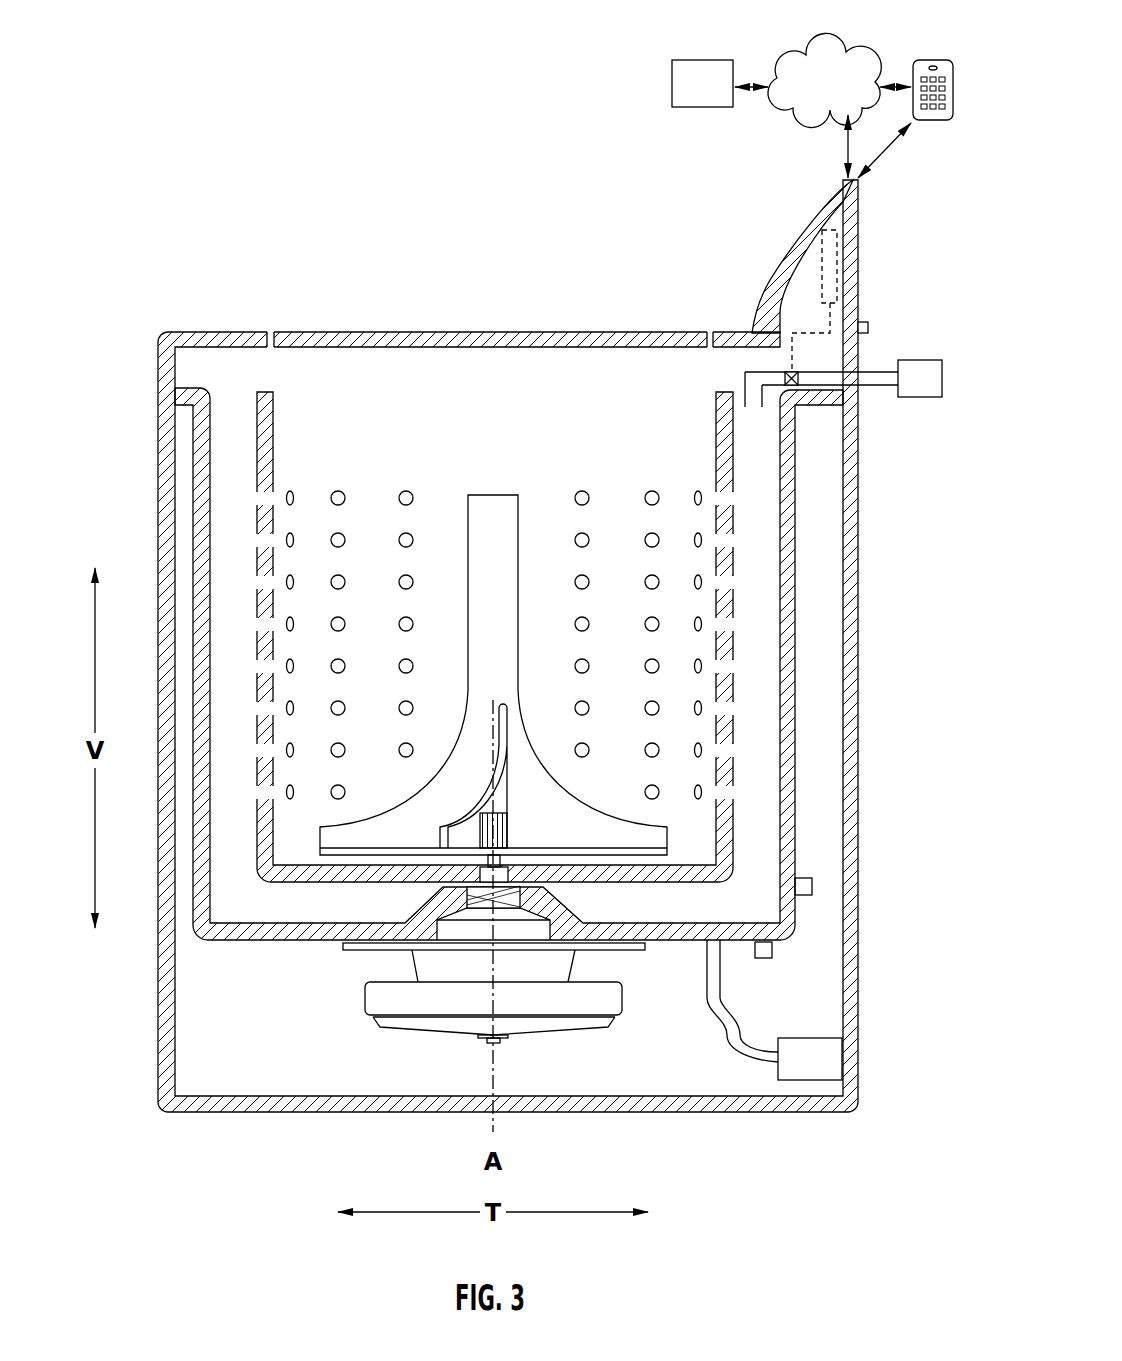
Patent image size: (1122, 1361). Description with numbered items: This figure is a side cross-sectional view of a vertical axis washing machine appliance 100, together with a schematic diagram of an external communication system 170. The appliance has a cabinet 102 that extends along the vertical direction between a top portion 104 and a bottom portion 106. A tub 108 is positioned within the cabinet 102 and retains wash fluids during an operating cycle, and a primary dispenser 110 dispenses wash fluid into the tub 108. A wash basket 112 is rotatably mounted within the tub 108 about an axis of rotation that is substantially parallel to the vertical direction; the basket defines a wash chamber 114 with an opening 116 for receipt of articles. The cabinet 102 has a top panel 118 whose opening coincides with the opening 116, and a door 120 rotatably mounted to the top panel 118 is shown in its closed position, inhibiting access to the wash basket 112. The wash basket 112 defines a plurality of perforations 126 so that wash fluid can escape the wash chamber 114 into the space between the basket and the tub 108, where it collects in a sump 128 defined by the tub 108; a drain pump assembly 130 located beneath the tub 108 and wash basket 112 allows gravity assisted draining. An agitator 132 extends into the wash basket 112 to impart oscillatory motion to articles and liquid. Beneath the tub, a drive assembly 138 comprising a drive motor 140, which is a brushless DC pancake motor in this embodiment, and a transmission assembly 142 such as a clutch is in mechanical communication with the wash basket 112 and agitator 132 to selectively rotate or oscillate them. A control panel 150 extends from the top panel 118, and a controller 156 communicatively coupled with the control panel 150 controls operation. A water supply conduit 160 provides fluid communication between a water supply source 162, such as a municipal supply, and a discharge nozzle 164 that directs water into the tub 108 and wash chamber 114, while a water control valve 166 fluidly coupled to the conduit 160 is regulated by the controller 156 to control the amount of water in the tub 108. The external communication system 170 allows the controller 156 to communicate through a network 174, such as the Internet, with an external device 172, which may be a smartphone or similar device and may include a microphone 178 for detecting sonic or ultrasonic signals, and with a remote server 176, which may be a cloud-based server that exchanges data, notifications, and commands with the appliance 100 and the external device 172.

The washing machine appliance 100 is at (198, 213).
The cabinet 102 is at (167, 437).
The top portion 104 is at (150, 340).
The bottom portion 106 is at (145, 1108).
The tub 108 is at (792, 783).
The primary dispenser 110 is at (735, 372).
The wash basket 112 is at (257, 417).
The wash chamber 114 is at (311, 440).
The opening 116 is at (578, 392).
The top panel 118 is at (200, 330).
The door 120 is at (382, 338).
The perforations 126 is at (417, 490).
The sump 128 is at (317, 917).
The drain pump assembly 130 is at (758, 1066).
The agitator 132 is at (500, 503).
The drive assembly 138 is at (333, 988).
The drive motor 140 is at (615, 1000).
The transmission assembly 142 is at (557, 948).
The control panel 150 is at (797, 232).
The controller 156 is at (838, 245).
The water supply conduit 160 is at (877, 388).
The water supply source 162 is at (903, 393).
The discharge nozzle 164 is at (753, 412).
The water control valve 166 is at (800, 378).
The external communication system 170 is at (895, 50).
The external device 172 is at (948, 72).
The network 174 is at (807, 95).
The remote server 176 is at (685, 97).
The microphone 178 is at (943, 124).